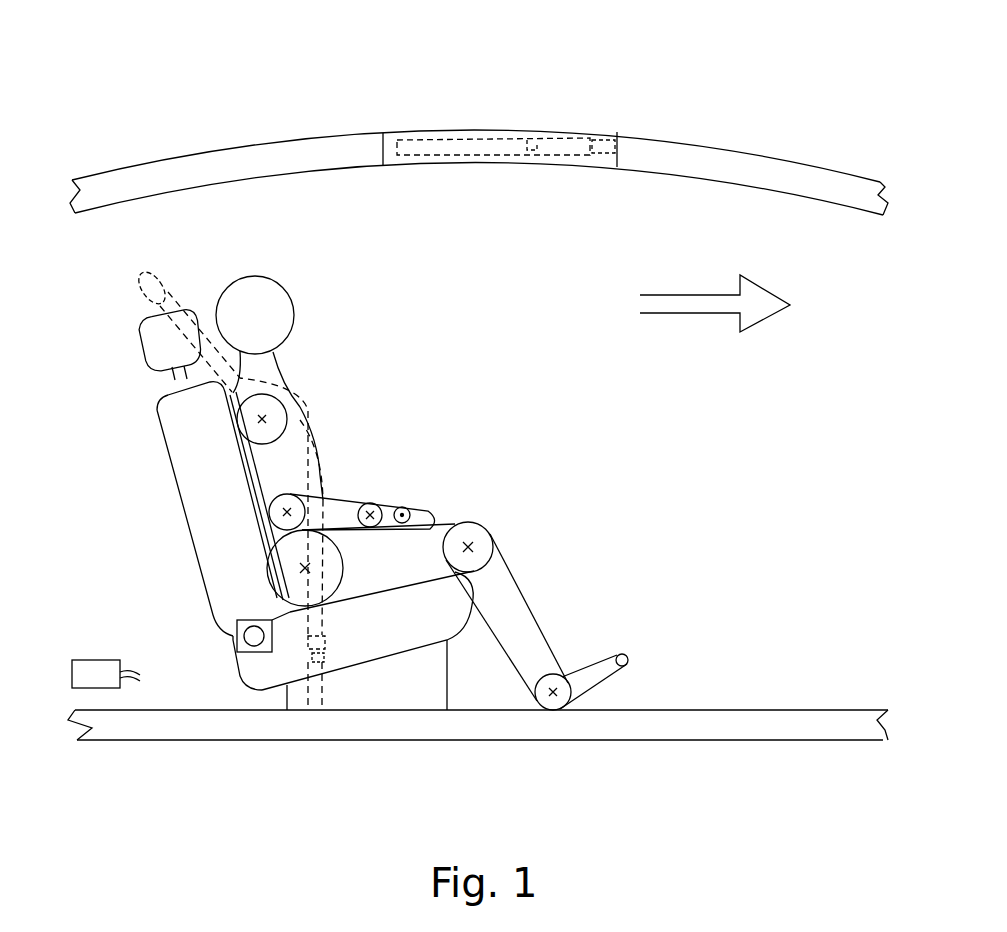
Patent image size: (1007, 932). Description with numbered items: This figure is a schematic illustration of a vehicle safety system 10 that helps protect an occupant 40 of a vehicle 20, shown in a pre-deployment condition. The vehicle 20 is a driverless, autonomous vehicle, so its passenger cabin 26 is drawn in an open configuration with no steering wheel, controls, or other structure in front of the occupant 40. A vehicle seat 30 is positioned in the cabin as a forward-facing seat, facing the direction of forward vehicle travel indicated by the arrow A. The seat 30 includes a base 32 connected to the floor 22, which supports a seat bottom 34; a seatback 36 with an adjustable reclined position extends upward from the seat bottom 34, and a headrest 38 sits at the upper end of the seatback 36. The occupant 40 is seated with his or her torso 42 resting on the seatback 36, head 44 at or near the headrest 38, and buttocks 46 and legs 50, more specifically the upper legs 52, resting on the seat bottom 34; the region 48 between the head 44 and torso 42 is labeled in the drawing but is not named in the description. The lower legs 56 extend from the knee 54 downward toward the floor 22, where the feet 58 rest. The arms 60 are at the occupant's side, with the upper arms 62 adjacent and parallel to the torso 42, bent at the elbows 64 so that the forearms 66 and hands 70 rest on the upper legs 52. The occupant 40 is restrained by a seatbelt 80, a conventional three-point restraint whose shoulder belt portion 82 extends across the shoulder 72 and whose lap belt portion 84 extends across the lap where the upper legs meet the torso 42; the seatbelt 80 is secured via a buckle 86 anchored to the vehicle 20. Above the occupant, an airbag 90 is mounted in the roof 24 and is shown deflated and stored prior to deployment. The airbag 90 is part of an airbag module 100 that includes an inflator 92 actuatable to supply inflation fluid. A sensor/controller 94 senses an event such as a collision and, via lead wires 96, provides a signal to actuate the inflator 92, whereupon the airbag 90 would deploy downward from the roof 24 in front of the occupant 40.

The vehicle safety system 10 is at (549, 91).
The vehicle 20 is at (170, 116).
The floor 22 is at (465, 718).
The roof 24 is at (650, 148).
The passenger cabin 26 is at (697, 200).
The vehicle seat 30 is at (184, 677).
The base 32 is at (402, 690).
The seat bottom 34 is at (358, 652).
The seatback 36 is at (215, 518).
The headrest 38 is at (152, 347).
The occupant 40 is at (382, 367).
The torso 42 is at (300, 408).
The head 44 is at (262, 308).
The buttocks 46 is at (287, 583).
The neck 48 is at (287, 338).
The legs 50 is at (385, 573).
The upper legs 52 is at (360, 583).
The knee 54 is at (470, 535).
The lower legs 56 is at (515, 605).
The feet 58 is at (583, 673).
The arms 60 is at (273, 467).
The upper arms 62 is at (278, 488).
The elbows 64 is at (287, 510).
The lower arms/forearms 66 is at (377, 508).
The hands 70 is at (403, 512).
The shoulder 72 is at (250, 425).
The seatbelt 80 is at (322, 472).
The shoulder belt portion 82 is at (207, 335).
The lap belt portion 84 is at (330, 566).
The buckle 86 is at (327, 647).
The airbag 90 is at (432, 130).
The inflator 92 is at (567, 135).
The sensor/controller 94 is at (95, 657).
The lead wires 96 is at (605, 140).
The airbag module 100 is at (451, 105).
The arrow A is at (757, 305).